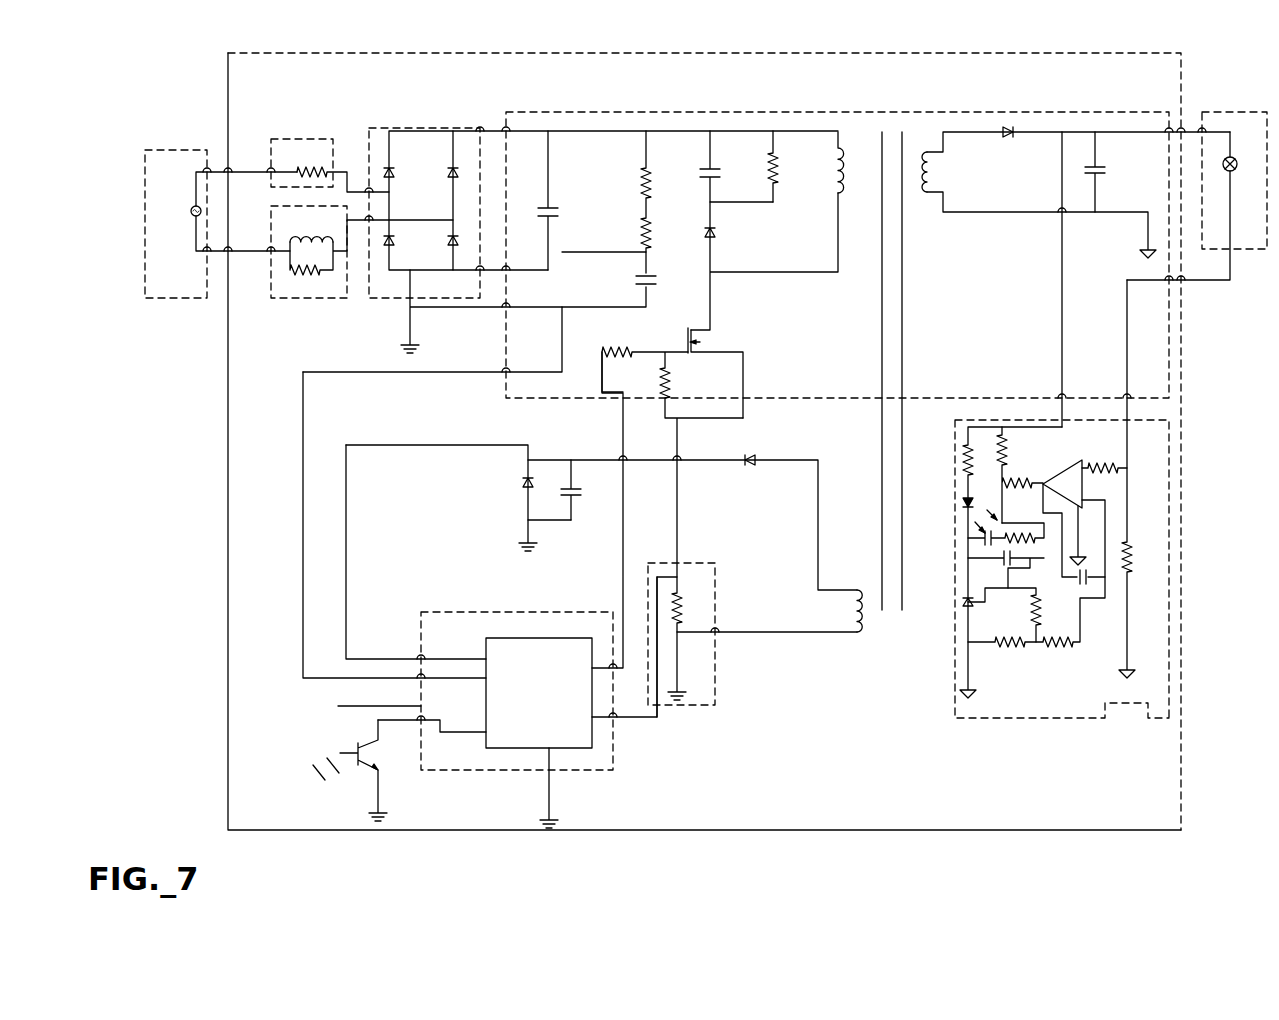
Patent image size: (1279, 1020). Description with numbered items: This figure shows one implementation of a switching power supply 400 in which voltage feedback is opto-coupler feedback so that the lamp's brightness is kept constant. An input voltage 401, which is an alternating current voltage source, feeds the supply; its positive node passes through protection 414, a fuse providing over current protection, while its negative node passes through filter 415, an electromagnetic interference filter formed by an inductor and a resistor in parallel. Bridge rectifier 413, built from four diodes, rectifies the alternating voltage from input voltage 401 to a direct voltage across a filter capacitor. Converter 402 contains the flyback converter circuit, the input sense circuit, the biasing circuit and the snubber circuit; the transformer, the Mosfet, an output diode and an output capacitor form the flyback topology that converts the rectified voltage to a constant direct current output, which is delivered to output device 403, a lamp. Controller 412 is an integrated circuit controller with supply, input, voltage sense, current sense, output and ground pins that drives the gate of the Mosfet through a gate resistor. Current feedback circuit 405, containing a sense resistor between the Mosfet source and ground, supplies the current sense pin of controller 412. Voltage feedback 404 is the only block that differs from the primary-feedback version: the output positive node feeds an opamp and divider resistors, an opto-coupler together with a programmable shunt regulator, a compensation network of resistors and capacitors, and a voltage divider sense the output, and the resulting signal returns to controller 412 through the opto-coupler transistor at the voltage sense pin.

The switching power supply 400 is at (1182, 510).
The input voltage 401 is at (145, 191).
The converter 402 is at (590, 112).
The output device 403 is at (1222, 112).
The voltage feedback circuit 404 is at (1012, 718).
The current feedback circuit 405 is at (690, 705).
The controller 412 is at (350, 708).
The bridge rectifier 413 is at (442, 298).
The protection 414 is at (309, 139).
The filter 415 is at (336, 298).